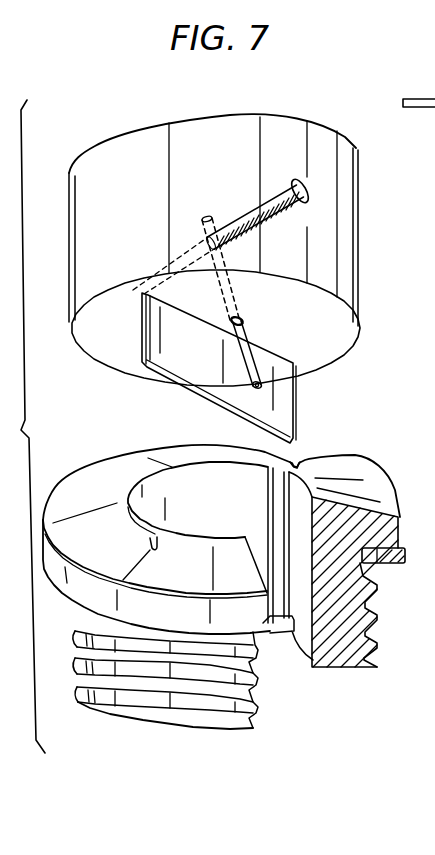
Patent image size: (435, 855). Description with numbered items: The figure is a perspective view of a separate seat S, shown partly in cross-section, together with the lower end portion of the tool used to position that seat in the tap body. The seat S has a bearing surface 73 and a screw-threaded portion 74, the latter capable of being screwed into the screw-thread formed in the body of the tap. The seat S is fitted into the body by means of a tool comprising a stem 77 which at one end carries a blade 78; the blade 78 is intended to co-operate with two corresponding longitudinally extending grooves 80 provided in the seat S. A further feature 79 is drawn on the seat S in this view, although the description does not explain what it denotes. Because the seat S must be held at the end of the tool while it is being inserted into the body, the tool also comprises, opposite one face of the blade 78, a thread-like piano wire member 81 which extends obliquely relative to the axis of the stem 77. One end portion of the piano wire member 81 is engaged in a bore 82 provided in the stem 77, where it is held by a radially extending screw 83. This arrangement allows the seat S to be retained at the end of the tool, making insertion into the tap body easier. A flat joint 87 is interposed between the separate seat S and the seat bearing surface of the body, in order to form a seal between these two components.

The bearing surface 73 is at (350, 477).
The screw-threaded portion 74 is at (377, 612).
The stem 77 is at (103, 152).
The blade 78 is at (293, 397).
The slot 79 is at (155, 546).
The longitudinally extending grooves 80 is at (297, 457).
The piano wire member 81 is at (252, 357).
The bore 82 is at (244, 323).
The radially extending screw 83 is at (257, 200).
The flat joint 87 is at (427, 529).
The separate seat S is at (104, 455).